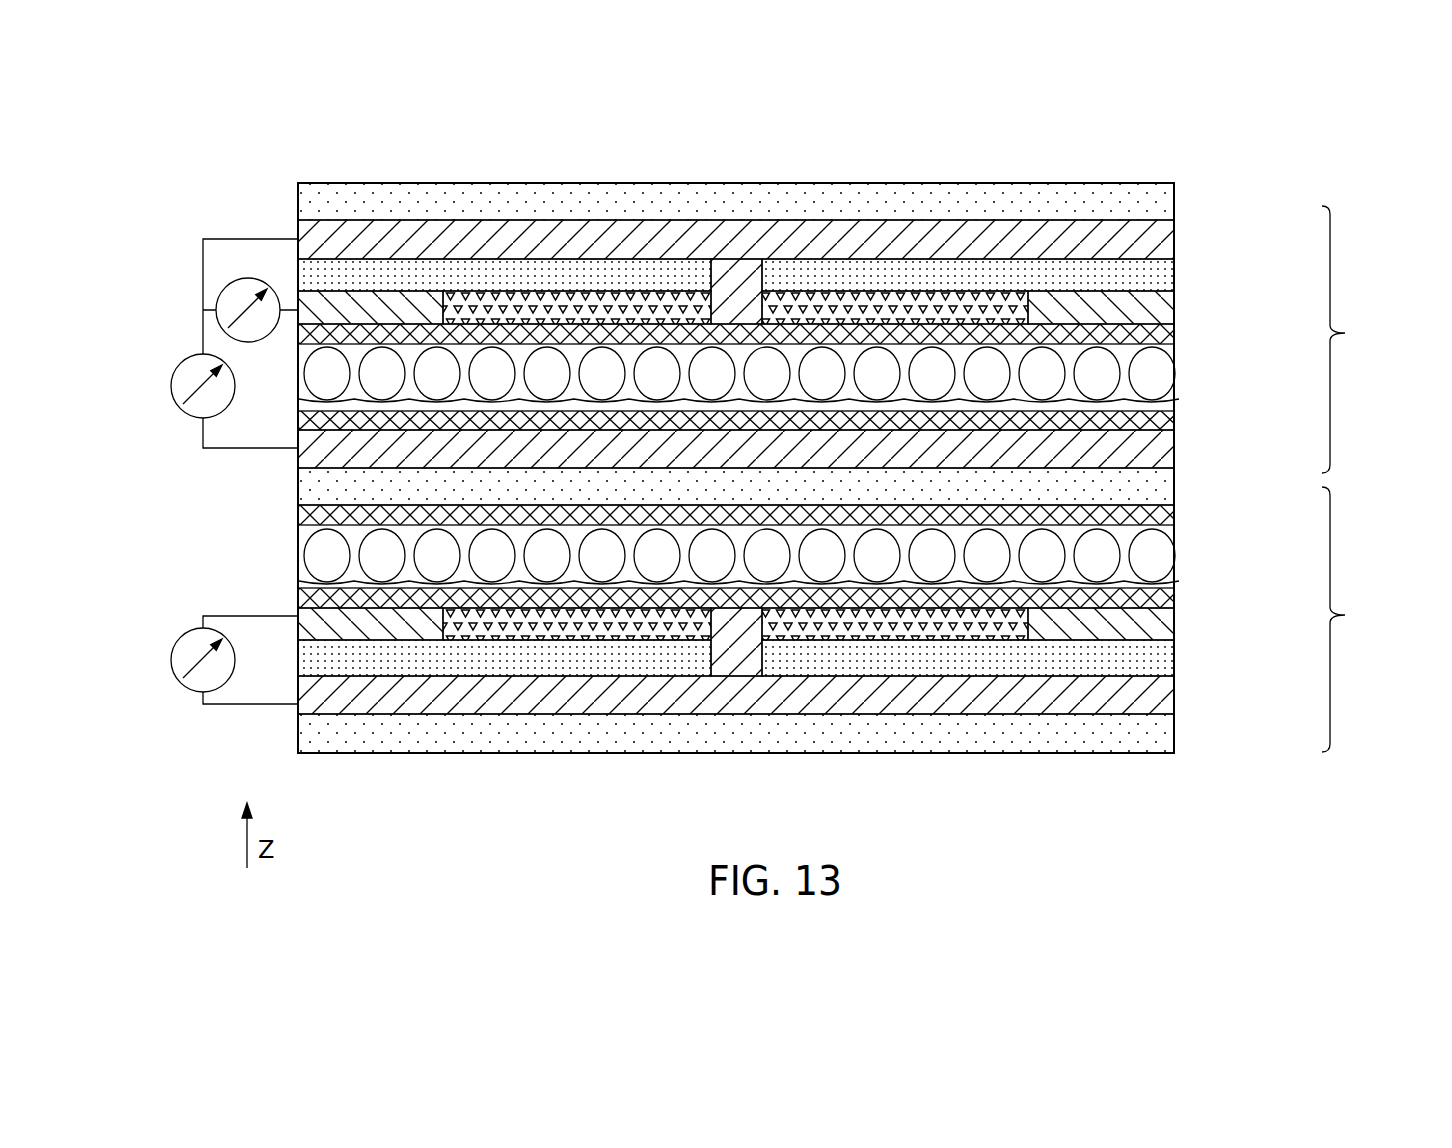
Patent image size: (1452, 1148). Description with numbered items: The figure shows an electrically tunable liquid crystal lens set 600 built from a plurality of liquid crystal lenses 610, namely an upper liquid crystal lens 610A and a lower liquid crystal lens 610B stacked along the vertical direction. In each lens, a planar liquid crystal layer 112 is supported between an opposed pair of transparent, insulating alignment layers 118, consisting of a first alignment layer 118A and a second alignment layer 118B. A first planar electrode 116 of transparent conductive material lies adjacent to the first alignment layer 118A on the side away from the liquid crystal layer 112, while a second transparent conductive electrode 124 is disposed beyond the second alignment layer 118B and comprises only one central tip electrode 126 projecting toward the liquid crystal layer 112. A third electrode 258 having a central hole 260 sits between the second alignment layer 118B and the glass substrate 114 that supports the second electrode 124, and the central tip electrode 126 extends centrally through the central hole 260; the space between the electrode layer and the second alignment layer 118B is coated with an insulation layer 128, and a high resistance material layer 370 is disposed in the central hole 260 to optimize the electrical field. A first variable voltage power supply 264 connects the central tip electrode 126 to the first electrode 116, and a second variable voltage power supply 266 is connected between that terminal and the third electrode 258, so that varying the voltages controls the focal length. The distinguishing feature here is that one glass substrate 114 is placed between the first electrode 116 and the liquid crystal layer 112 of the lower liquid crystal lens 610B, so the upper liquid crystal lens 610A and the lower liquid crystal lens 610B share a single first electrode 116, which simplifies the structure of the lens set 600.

The electrically tunable liquid crystal lens set 600 is at (1145, 152).
The liquid crystal lenses 610 is at (1364, 479).
The upper liquid crystal lens 610A is at (1364, 339).
The lower liquid crystal lens 610B is at (1364, 619).
The glass substrate 114 is at (880, 190).
The second transparent conductive electrode 124 is at (1158, 246).
The insulation layer 128 is at (1158, 276).
The central tip electrode 126 is at (737, 316).
The third electrode 258 is at (1158, 312).
The high resistance material layer 370 is at (548, 294).
The central hole 260 is at (1005, 294).
The alignment layers 118 is at (807, 467).
The first alignment layer 118A is at (1158, 425).
The second alignment layer 118B is at (1158, 340).
The liquid crystal layer 112 is at (1176, 374).
The first planar electrode 116 is at (1158, 455).
The first variable voltage power supply 264 is at (181, 362).
The second variable voltage power supply 266 is at (270, 334).